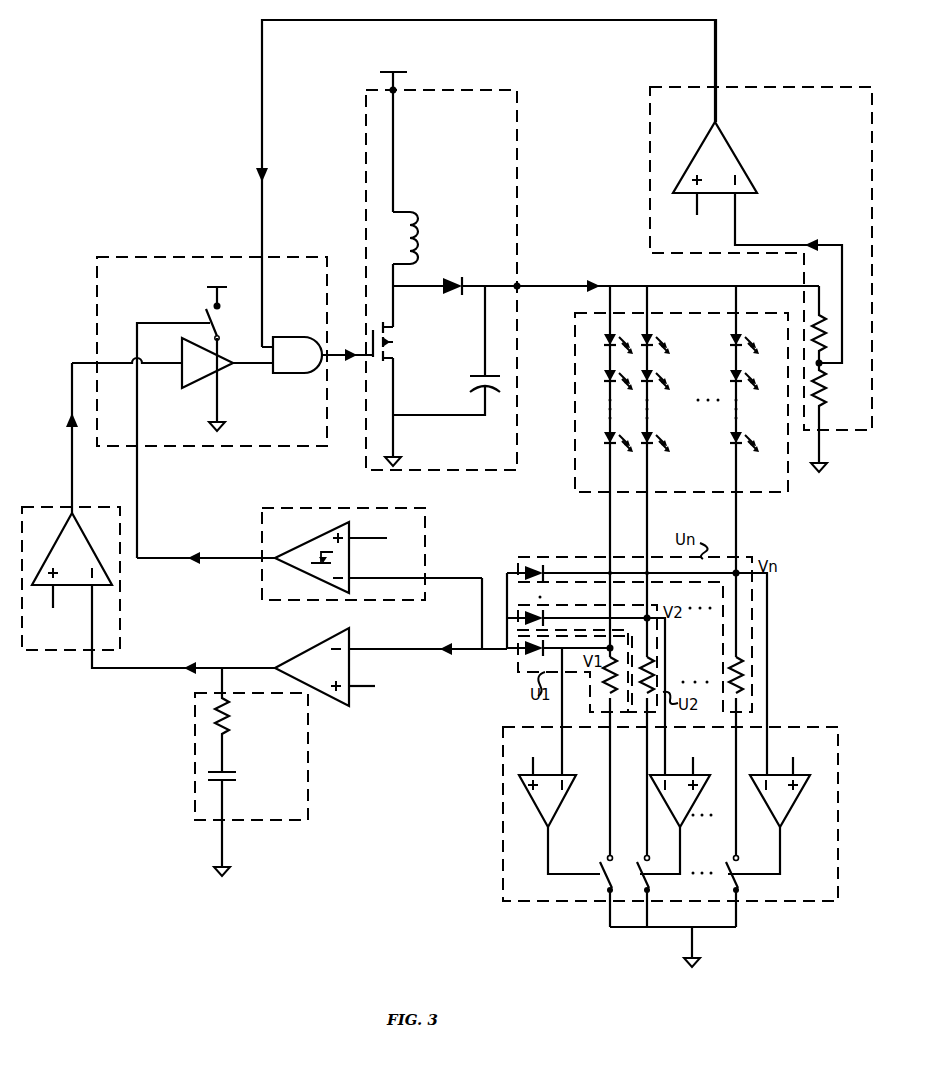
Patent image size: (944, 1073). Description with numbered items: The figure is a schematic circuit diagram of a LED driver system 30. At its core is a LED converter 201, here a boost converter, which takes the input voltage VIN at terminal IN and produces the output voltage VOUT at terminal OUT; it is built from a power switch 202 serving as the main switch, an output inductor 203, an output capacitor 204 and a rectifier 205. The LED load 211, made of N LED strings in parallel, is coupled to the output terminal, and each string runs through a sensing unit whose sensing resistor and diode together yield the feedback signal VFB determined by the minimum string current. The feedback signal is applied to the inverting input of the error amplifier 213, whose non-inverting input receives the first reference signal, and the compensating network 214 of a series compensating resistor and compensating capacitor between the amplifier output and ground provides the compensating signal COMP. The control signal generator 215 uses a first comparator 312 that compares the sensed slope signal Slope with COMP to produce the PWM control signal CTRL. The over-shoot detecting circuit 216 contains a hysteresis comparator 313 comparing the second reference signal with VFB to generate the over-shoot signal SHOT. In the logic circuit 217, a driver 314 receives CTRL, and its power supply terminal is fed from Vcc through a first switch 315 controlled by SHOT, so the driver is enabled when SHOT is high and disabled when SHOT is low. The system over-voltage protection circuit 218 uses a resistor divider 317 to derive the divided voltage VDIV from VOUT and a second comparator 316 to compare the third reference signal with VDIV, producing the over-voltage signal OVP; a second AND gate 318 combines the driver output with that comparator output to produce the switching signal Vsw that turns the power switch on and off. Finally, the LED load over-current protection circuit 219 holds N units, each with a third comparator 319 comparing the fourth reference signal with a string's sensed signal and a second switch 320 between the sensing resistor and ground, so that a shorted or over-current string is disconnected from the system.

The LED driver system 30 is at (172, 124).
The LED converter 201 is at (492, 88).
The power switch 202 is at (394, 346).
The output inductor 203 is at (441, 239).
The output capacitor 204 is at (484, 378).
The rectifier 205 is at (452, 280).
The LED load 211 is at (727, 494).
The error amplifier 213 is at (312, 640).
The compensating network 214 is at (196, 779).
The control signal generator 215 is at (62, 507).
The over-shoot detecting circuit 216 is at (318, 508).
The logic circuit 217 is at (187, 447).
The system over-voltage protection circuit 218 is at (803, 88).
The LED load over-current protection circuit 219 is at (758, 905).
The first comparator 312 is at (50, 548).
The hysteresis comparator 313 is at (305, 543).
The driver 314 is at (191, 387).
The first switch 315 is at (201, 312).
The second comparator 316 is at (732, 148).
The resistor divider 317 is at (828, 367).
The second AND gate 318 is at (282, 374).
The third comparator 319 is at (558, 806).
The second switch 320 is at (594, 864).